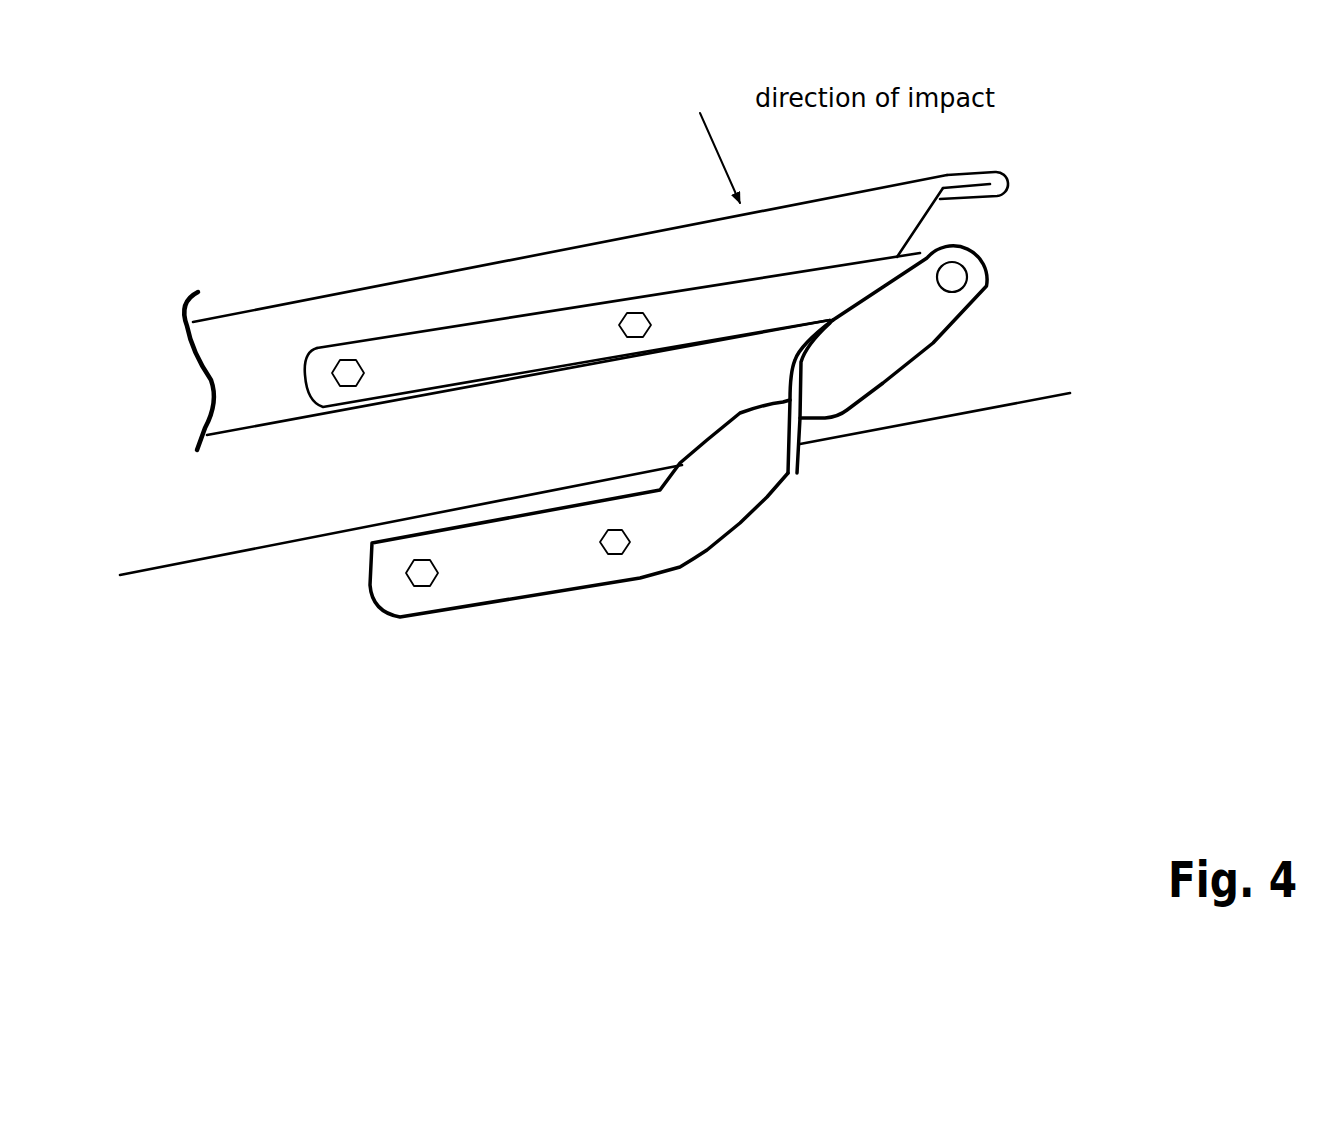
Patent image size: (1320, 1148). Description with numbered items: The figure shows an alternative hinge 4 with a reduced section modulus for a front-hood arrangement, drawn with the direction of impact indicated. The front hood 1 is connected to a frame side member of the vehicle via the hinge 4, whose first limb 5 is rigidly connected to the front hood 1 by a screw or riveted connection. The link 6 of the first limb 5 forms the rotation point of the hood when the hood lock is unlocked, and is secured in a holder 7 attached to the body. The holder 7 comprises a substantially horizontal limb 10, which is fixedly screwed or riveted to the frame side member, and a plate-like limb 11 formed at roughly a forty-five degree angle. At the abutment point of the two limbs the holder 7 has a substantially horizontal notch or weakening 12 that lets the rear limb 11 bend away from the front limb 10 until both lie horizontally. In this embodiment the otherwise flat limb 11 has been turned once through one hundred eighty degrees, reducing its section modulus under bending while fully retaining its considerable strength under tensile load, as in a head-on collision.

The front hood 1 is at (267, 340).
The hinge 4 is at (760, 439).
The first limb 5 is at (725, 305).
The link 6 is at (955, 277).
The holder 7 is at (857, 420).
The horizontal limb 10 is at (530, 565).
The limb 11 is at (934, 306).
The notch or weakening 12 is at (777, 393).